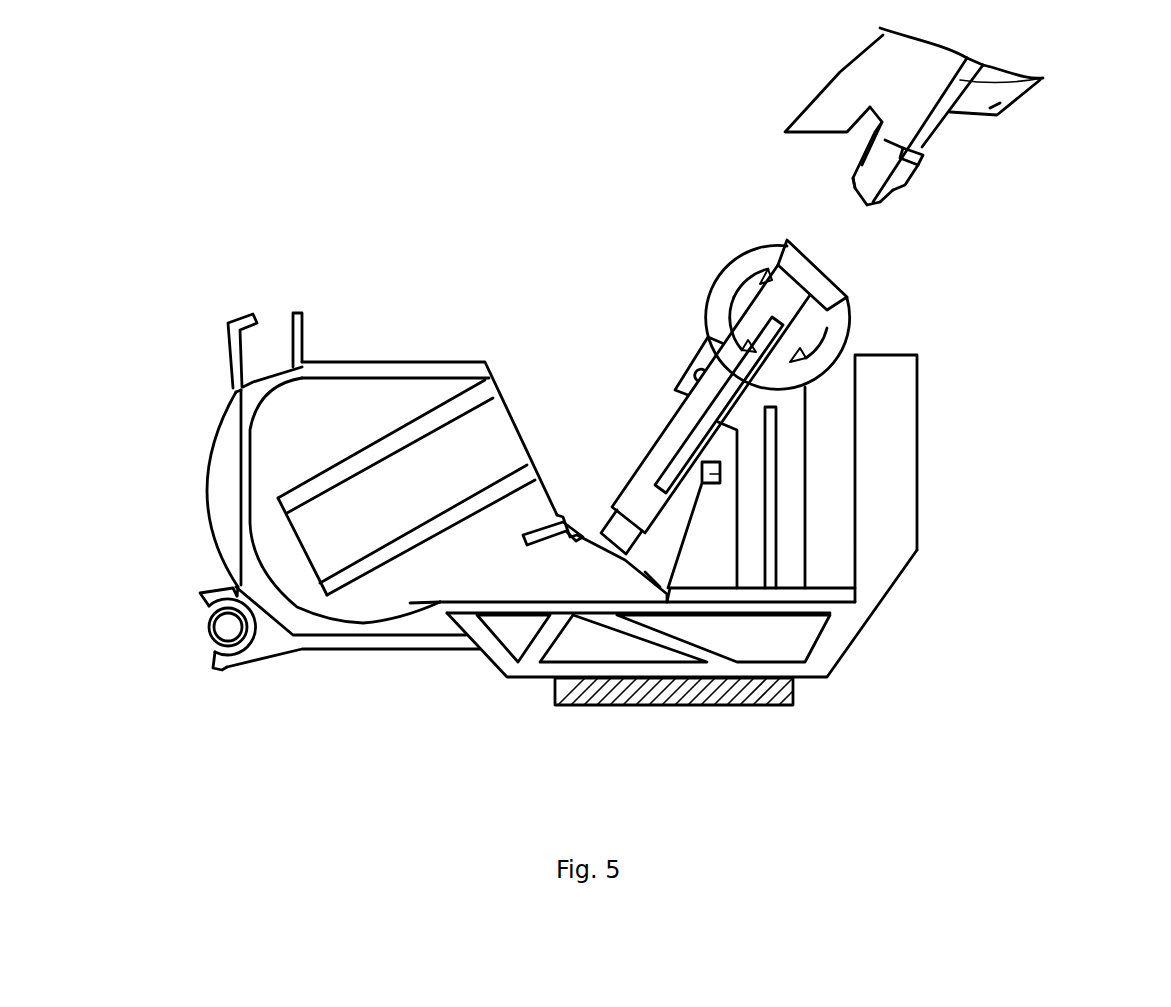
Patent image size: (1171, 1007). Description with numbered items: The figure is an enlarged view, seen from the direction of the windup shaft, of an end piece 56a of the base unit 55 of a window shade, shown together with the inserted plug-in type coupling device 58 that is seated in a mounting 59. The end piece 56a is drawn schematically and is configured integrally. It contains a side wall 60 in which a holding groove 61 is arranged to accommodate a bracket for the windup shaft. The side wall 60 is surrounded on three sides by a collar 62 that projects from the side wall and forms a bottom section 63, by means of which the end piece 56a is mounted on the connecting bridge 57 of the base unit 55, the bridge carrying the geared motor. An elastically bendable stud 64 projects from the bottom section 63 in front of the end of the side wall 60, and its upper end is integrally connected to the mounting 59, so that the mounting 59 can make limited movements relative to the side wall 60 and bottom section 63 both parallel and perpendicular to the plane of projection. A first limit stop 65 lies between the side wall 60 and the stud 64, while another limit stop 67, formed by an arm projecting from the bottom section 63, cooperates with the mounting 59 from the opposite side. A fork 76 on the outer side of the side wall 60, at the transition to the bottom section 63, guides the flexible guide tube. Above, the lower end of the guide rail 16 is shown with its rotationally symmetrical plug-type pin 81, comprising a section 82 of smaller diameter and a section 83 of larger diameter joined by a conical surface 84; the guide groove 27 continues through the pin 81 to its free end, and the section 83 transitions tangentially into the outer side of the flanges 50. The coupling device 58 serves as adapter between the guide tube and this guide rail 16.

The end piece 56a is at (262, 157).
The collar 62 is at (453, 362).
The side wall 60 is at (387, 400).
The holding groove 61 is at (492, 445).
The bottom section 63 is at (470, 600).
The fork 76 is at (227, 672).
The connecting bridge 57 is at (705, 705).
The limit stop 67 is at (905, 417).
The elastically bendable stud 64 is at (790, 560).
The first limit stop 65 is at (723, 482).
The mounting 59 is at (853, 318).
The coupling device 58 is at (653, 398).
The guide rail 16 is at (1082, 187).
The flange 50 is at (823, 83).
The guide groove 27 is at (1043, 78).
The plug-type pin 81 is at (803, 163).
The section with larger diameter 83 is at (925, 160).
The conical surface 84 is at (913, 172).
The section with smaller diameter 82 is at (893, 190).
The base unit 55 is at (853, 188).